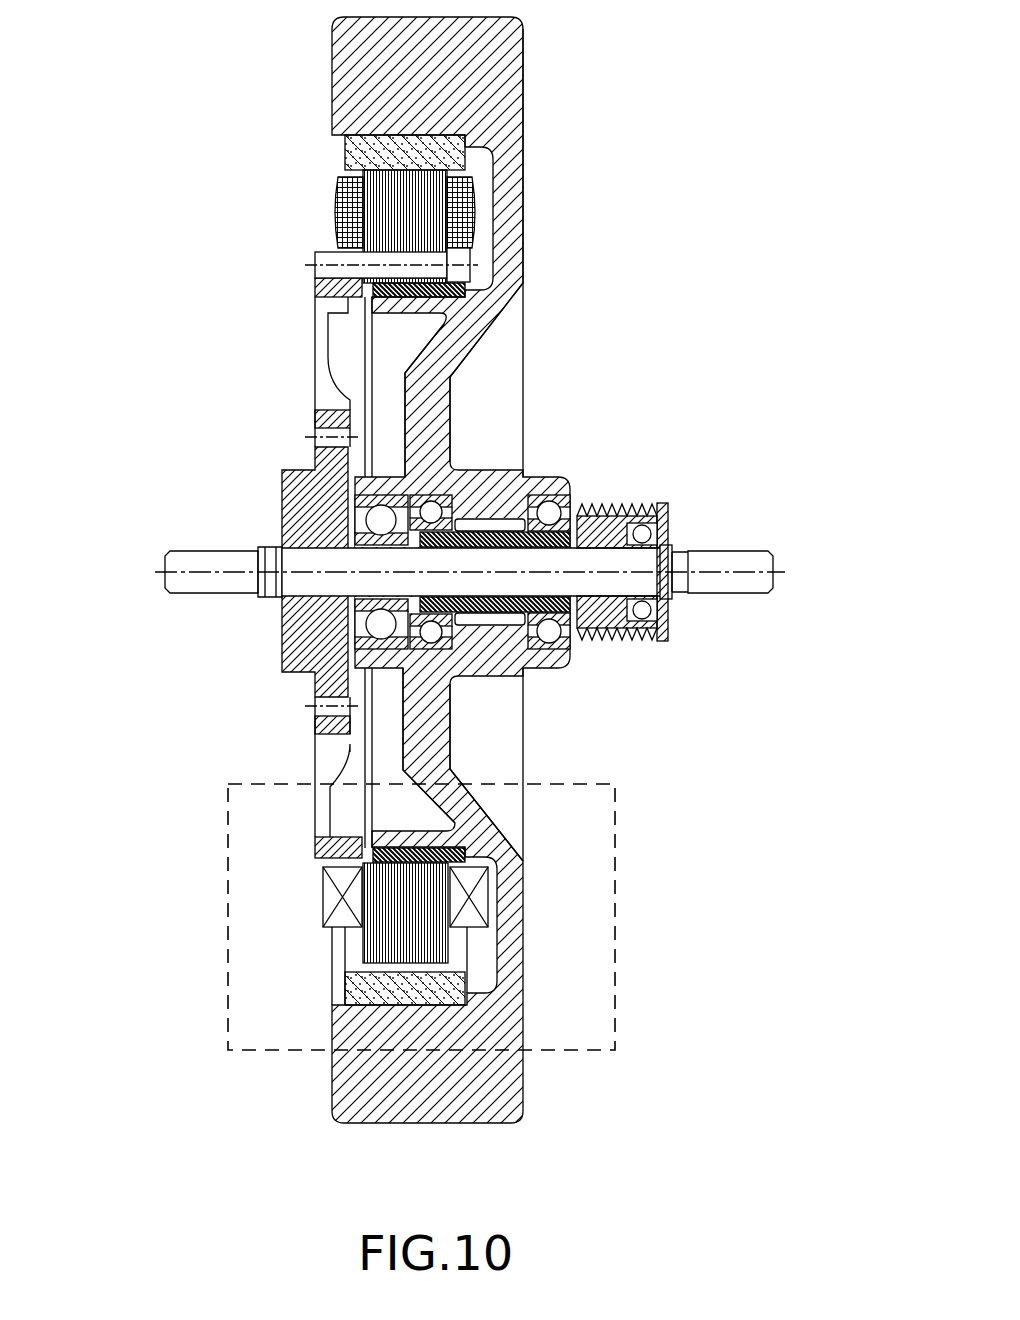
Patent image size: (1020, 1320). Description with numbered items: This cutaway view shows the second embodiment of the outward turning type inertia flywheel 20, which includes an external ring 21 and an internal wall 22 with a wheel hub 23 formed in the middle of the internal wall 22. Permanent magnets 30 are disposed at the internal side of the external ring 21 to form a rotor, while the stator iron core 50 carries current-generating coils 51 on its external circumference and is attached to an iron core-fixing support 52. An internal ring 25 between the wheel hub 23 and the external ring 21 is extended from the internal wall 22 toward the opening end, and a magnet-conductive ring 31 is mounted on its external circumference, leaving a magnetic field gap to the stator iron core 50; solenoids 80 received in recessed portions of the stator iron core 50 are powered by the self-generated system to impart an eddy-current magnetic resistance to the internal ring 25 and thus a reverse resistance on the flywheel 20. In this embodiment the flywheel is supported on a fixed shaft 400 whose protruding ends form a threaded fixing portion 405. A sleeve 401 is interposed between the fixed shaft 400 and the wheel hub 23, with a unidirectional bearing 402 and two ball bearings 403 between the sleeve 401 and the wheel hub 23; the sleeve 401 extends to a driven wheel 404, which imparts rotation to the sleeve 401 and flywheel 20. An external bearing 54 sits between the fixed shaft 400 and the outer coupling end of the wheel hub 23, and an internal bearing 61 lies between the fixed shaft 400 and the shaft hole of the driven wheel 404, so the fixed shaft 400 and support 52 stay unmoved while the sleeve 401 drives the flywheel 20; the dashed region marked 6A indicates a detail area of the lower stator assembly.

The outward turning type inertia flywheel 20 is at (572, 166).
The external ring 21 is at (527, 78).
The internal wall 22 is at (523, 240).
The wheel hub 23 is at (468, 471).
The internal ring 25 is at (350, 343).
The permanent magnets 30 is at (372, 152).
The magnet-conductive ring 31 is at (375, 290).
The stator iron core 50 is at (388, 183).
The current-generating coils 51 is at (347, 213).
The iron core-fixing support 52 is at (300, 490).
The external bearing 54 is at (385, 520).
The internal bearing 61 is at (657, 610).
The solenoids 80 is at (490, 913).
The fixed shaft 400 is at (484, 559).
The sleeve 401 is at (607, 507).
The unidirectional bearing 402 is at (497, 522).
The ball bearings 403 is at (463, 622).
The driven wheel 404 is at (665, 533).
The fixing portion 405 is at (750, 582).
The detail region of FIG. 6A is at (228, 931).